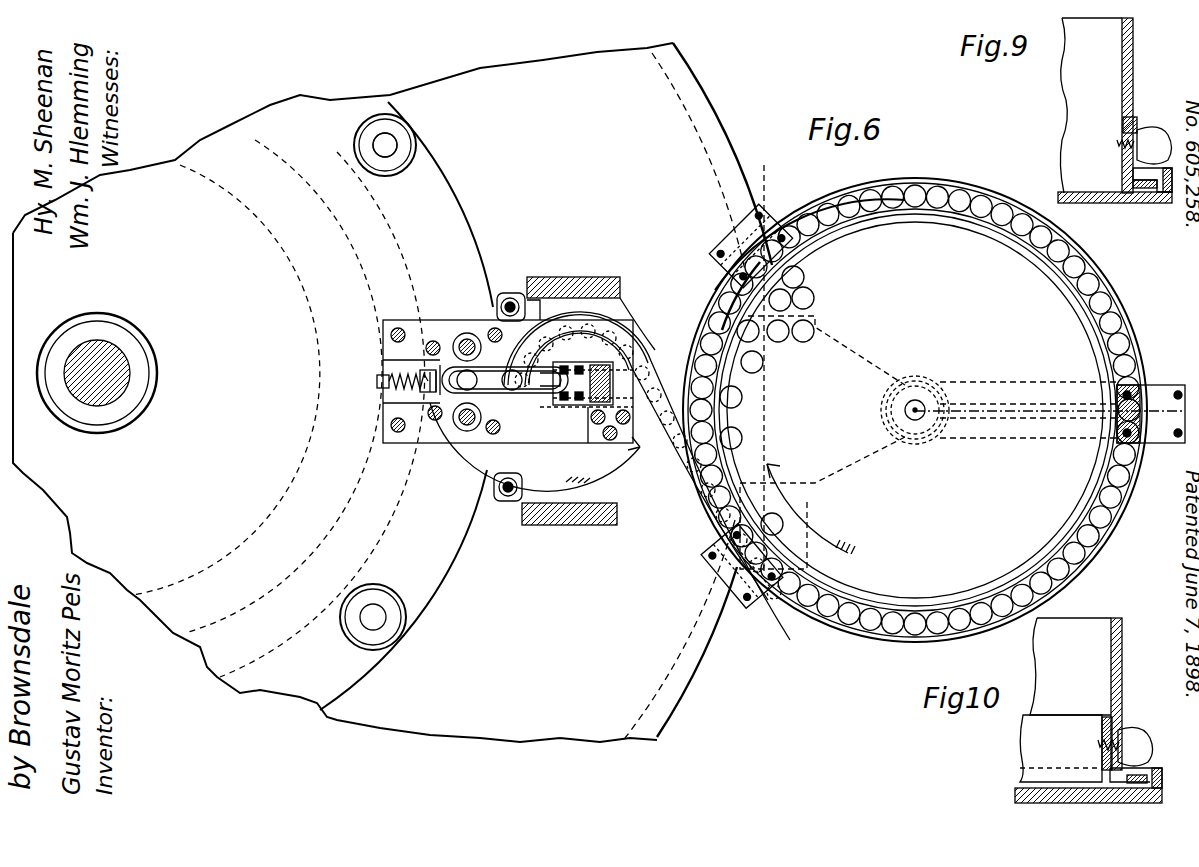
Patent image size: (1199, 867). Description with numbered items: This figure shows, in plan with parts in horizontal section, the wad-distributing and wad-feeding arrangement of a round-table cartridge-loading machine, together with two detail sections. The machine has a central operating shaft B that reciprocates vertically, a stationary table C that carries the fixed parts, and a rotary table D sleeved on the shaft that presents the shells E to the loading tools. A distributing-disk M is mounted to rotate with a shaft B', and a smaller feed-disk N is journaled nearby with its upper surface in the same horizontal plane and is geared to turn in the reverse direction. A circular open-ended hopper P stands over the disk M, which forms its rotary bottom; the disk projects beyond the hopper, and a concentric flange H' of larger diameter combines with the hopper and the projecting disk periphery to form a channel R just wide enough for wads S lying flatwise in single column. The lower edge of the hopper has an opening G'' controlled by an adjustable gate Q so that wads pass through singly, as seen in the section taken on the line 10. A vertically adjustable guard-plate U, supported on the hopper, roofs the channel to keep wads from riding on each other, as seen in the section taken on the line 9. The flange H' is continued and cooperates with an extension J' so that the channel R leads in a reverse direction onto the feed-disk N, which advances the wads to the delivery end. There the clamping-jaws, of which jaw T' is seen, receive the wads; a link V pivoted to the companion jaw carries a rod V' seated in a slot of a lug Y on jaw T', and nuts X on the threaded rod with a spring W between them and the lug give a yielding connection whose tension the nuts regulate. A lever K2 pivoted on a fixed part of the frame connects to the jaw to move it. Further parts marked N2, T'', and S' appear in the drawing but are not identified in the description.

In FIG. 6, the main operating shaft B is at (103, 371).
In FIG. 6, the shaft B' is at (1033, 391).
In FIG. 6, the stationary table C is at (392, 392).
In FIG. 6, the rotary table D is at (272, 120).
In FIG. 6, the shells E is at (374, 142).
In FIG. 6, the feed-disk N is at (612, 470).
In FIG. 6, the pivot pins N2 is at (470, 340).
In FIG. 6, the plate T'' is at (508, 365).
In FIG. 6, the clamping-jaw T' is at (586, 404).
In FIG. 6, the link V is at (505, 406).
In FIG. 6, the rod V' is at (381, 374).
In FIG. 6, the nuts X is at (424, 380).
In FIG. 6, the spring W is at (430, 392).
In FIG. 6, the lug Y is at (440, 397).
In FIG. 6, the extension J' is at (647, 465).
In FIG. 6, the wads S is at (648, 447).
In FIG. 6, the balls S' is at (812, 370).
In FIG. 6, the lever K2 is at (660, 426).
In FIG. 6, the hopper P is at (940, 230).
In FIG. 9, the hopper P is at (1133, 72).
In FIG. 10, the hopper P is at (1123, 662).
In FIG. 6, the adjustable gate Q is at (848, 238).
In FIG. 10, the adjustable gate Q is at (1078, 725).
In FIG. 6, the channel R is at (1120, 460).
In FIG. 9, the channel R is at (1153, 188).
In FIG. 10, the channel R is at (1098, 785).
In FIG. 6, the distributing-disk M is at (915, 410).
In FIG. 9, the distributing-disk M is at (1085, 193).
In FIG. 10, the distributing-disk M is at (1015, 797).
In FIG. 6, the guard-plate U is at (1110, 490).
In FIG. 9, the guard-plate U is at (1140, 183).
In FIG. 10, the guard-plate U is at (1147, 773).
In FIG. 6, the flange H' is at (1151, 386).
In FIG. 9, the flange H' is at (1158, 210).
In FIG. 10, the flange H' is at (1148, 765).
In FIG. 10, the opening G'' is at (1066, 751).
In FIG. 6, the section line 9 is at (1112, 298).
In FIG. 6, the section line 10 is at (830, 238).